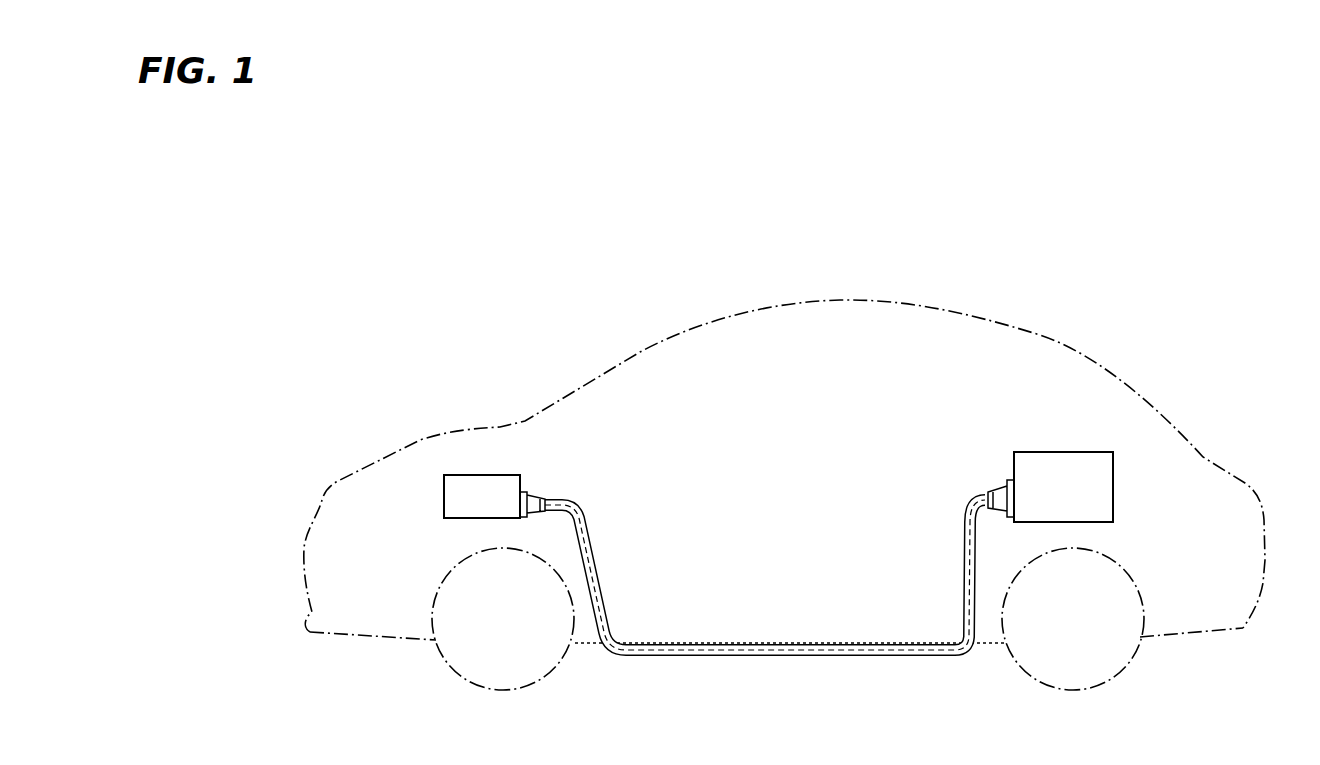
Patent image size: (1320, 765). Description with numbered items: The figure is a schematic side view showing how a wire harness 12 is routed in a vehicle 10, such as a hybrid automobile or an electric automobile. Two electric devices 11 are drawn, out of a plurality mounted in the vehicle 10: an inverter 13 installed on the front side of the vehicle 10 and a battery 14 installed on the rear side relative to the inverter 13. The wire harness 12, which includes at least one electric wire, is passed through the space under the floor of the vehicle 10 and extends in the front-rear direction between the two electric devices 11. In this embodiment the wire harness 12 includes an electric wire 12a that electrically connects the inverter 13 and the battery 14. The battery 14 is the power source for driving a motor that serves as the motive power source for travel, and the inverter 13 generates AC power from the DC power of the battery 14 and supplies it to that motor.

The vehicle 10 is at (1040, 336).
The electric devices 11 is at (495, 475).
The wire harness 12 is at (765, 575).
The electric wire 12a is at (592, 578).
The inverter 13 is at (505, 475).
The battery 14 is at (1058, 452).